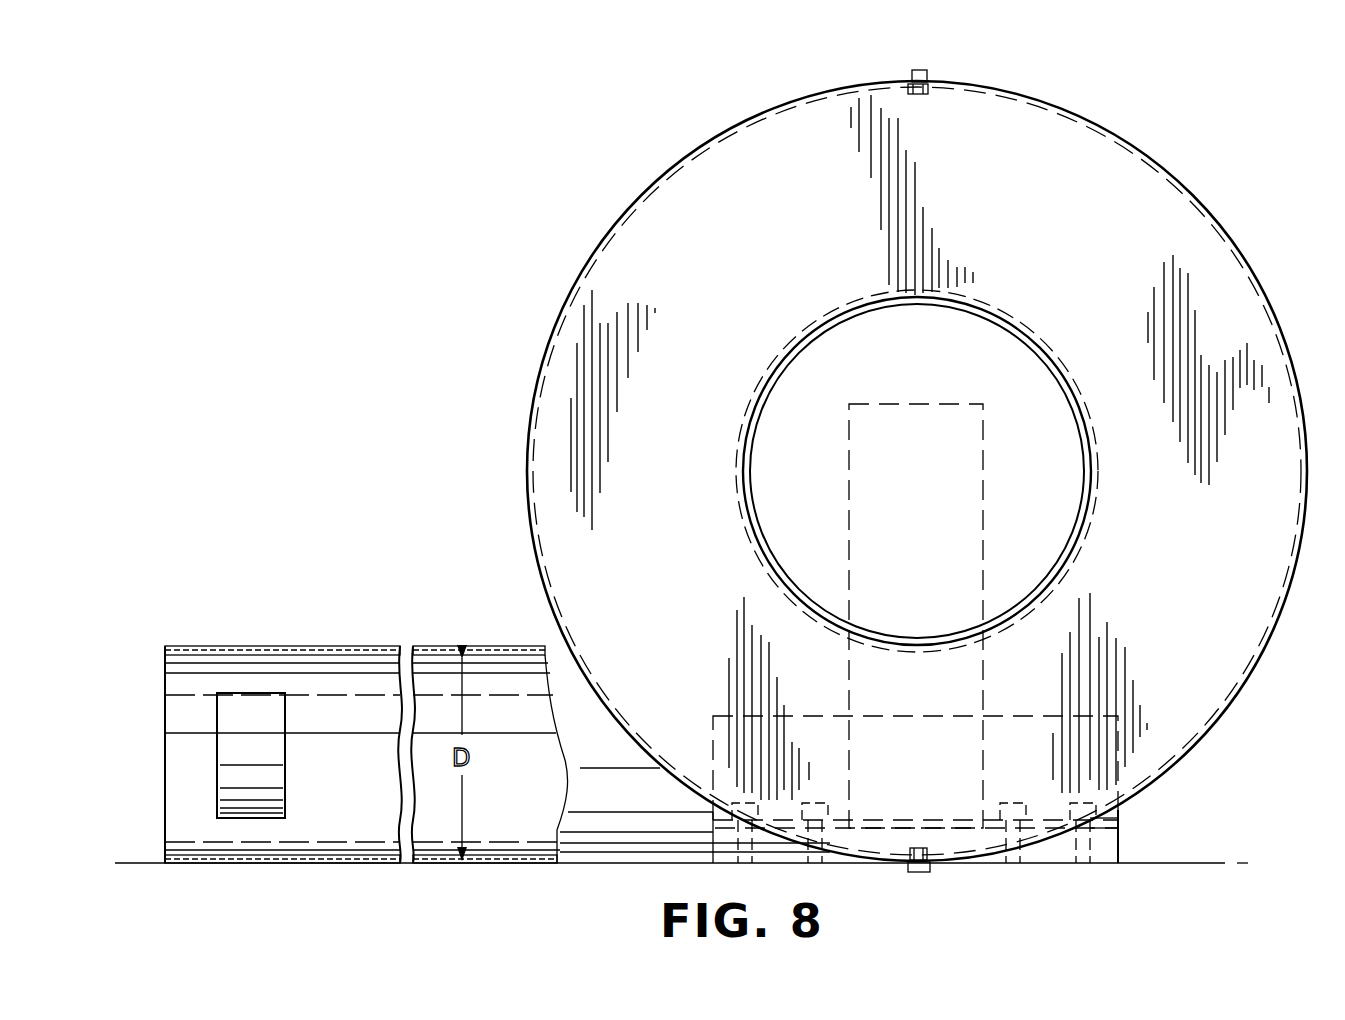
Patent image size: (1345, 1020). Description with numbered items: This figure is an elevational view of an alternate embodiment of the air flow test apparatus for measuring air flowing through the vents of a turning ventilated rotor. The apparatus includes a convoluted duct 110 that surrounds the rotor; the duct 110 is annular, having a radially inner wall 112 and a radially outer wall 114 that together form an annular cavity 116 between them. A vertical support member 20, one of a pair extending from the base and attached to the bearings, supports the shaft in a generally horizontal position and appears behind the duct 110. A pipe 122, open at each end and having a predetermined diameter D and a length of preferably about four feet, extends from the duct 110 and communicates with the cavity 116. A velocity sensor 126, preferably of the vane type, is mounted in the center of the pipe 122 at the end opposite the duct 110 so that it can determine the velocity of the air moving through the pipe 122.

The convoluted duct 110 is at (884, 471).
The radially inner wall 112 is at (795, 345).
The radially outer wall 114 is at (548, 340).
The annular cavity 116 is at (1110, 165).
The vertical support member 20 is at (985, 490).
The pipe 122 is at (342, 648).
The velocity sensor 126 is at (246, 698).